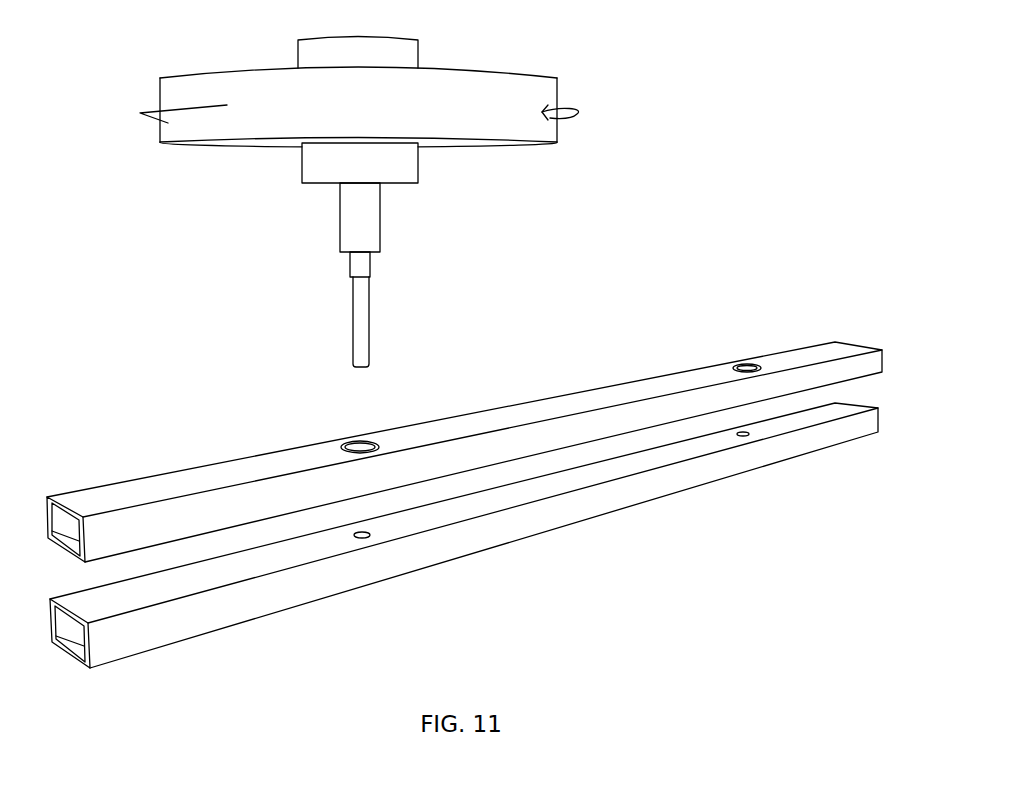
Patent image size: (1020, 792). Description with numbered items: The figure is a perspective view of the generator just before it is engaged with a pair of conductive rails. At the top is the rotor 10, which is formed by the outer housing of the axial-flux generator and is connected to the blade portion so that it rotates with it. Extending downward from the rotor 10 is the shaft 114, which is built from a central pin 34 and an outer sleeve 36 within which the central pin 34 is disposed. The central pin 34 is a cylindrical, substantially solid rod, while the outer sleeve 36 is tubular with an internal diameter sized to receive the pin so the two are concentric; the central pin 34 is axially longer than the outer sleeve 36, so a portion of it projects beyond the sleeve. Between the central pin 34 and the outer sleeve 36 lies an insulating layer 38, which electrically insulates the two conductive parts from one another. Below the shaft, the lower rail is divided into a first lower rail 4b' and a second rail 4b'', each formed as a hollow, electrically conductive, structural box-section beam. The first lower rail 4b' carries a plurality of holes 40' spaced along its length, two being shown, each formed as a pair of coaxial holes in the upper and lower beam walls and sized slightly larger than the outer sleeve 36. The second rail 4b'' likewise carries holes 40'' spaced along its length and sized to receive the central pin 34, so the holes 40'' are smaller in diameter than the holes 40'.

The rotor 10 is at (465, 82).
The shaft 114 is at (321, 223).
The outer sleeve 36 is at (370, 202).
The insulating layer 38 is at (370, 262).
The central pin 34 is at (362, 305).
The first lower rail 4b' is at (501, 428).
The second rail 4b'' is at (482, 535).
The holes 40' is at (587, 373).
The holes 40'' is at (590, 509).